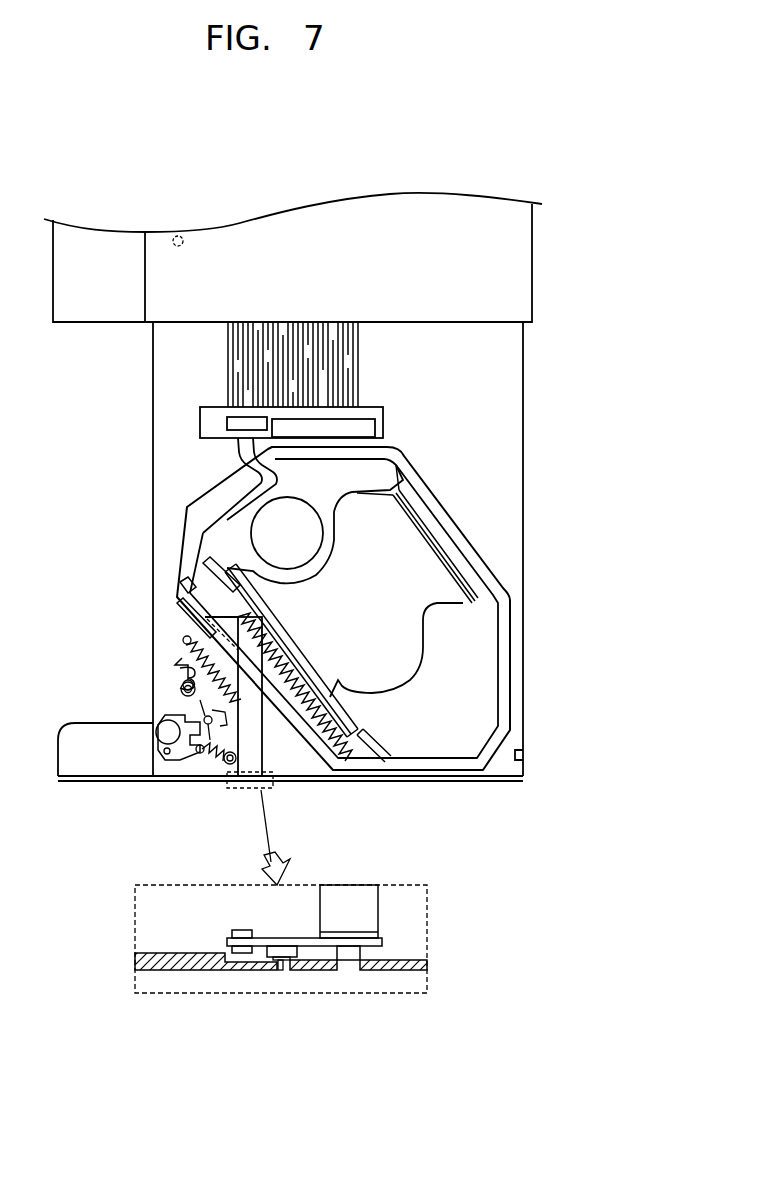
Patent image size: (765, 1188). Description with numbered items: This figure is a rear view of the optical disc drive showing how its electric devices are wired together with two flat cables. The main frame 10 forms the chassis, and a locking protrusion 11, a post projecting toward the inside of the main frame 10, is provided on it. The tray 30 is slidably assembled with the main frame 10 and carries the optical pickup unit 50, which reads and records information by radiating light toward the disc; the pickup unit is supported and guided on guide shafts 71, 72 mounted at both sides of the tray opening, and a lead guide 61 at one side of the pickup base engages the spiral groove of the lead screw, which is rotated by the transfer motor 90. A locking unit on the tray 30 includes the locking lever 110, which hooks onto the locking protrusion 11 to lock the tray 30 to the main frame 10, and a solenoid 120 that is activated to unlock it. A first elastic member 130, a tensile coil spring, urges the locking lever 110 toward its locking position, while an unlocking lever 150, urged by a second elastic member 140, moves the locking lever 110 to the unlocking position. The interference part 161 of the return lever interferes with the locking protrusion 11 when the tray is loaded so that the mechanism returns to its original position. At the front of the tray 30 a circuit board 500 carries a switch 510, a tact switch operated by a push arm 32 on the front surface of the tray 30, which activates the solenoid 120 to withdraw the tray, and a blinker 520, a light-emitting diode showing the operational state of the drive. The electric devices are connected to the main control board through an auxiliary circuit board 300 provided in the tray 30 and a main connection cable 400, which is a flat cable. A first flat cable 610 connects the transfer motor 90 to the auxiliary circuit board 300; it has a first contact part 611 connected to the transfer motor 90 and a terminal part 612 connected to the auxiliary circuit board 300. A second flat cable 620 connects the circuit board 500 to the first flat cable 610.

The main frame 10 is at (522, 258).
The locking protrusion 11 is at (178, 236).
The main connection cable 400 is at (236, 370).
The auxiliary circuit board 300 is at (207, 425).
The terminal part 612 is at (233, 452).
The first flat cable 610 is at (195, 547).
The transfer motor 90 is at (180, 585).
The first contact part 611 is at (190, 608).
The second elastic member 140 is at (190, 658).
The interference part 161 is at (163, 677).
The second flat cable 620 is at (247, 647).
The guide shaft 71 is at (300, 657).
The guide shaft 72 is at (425, 545).
The optical pickup unit 50 is at (413, 682).
The locking lever 110 is at (157, 770).
The unlocking lever 150 is at (205, 733).
The first elastic member 130 is at (213, 763).
The solenoid 120 is at (273, 765).
The lead guide 61 is at (352, 748).
The tray 30 is at (478, 781).
The circuit board 500 is at (382, 942).
The push arm 32 is at (200, 970).
The switch 510 is at (280, 970).
The blinker 520 is at (349, 960).